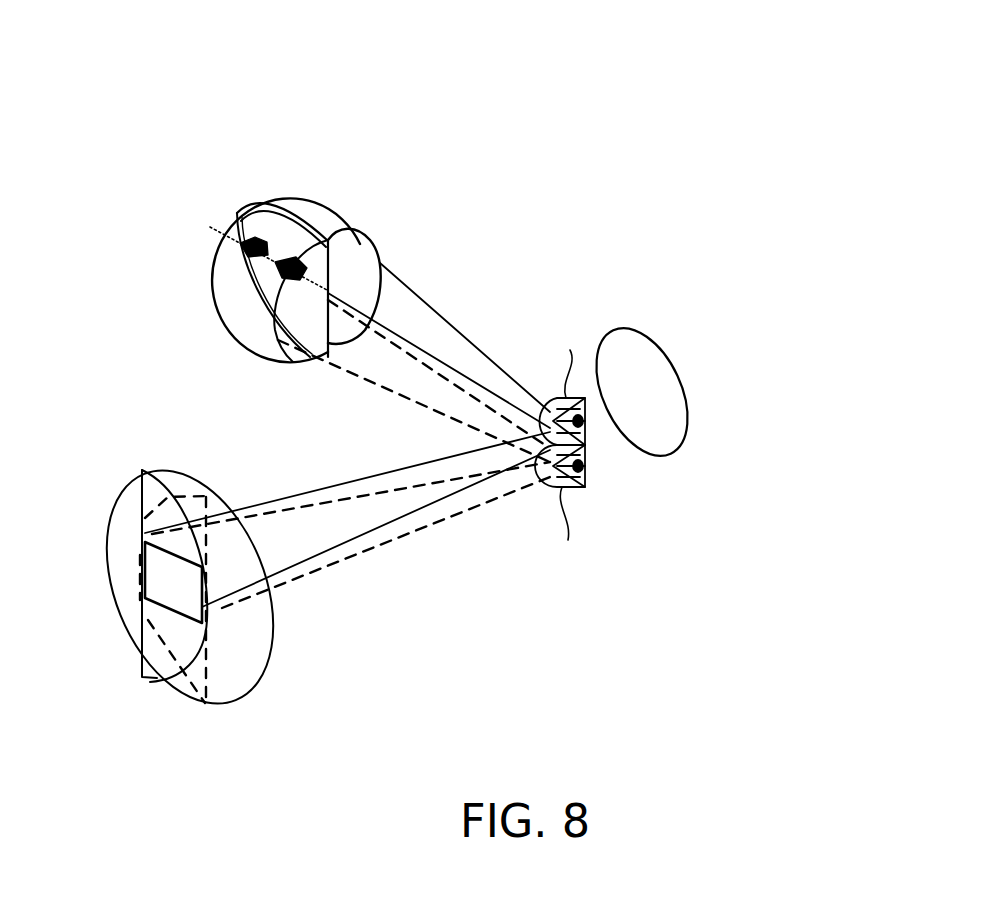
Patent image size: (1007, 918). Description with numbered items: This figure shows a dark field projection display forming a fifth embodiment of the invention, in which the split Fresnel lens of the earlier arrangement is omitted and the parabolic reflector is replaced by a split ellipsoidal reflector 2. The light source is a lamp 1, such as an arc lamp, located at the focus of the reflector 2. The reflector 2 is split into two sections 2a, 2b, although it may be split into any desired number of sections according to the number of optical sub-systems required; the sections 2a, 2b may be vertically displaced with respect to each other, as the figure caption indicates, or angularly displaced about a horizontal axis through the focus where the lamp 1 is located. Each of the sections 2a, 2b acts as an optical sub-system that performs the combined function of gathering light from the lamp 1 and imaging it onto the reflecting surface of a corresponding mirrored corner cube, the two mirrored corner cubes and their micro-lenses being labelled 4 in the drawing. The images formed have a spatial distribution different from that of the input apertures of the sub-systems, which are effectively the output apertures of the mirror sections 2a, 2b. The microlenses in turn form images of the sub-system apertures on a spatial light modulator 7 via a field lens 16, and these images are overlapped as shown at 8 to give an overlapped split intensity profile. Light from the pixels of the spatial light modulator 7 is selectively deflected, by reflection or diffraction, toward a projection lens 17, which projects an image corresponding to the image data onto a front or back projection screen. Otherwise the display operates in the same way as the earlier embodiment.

The lamp 1 is at (277, 250).
The split ellipsoidal reflector 2 is at (323, 192).
The reflector section 2a is at (335, 216).
The reflector section 2b is at (248, 328).
The two mirrored corner cubes and micro-lenses 4 is at (595, 455).
The spatial light modulator 7 is at (152, 575).
The overlapped images 8 is at (180, 622).
The field lens 16 is at (181, 471).
The projection lens 17 is at (680, 345).